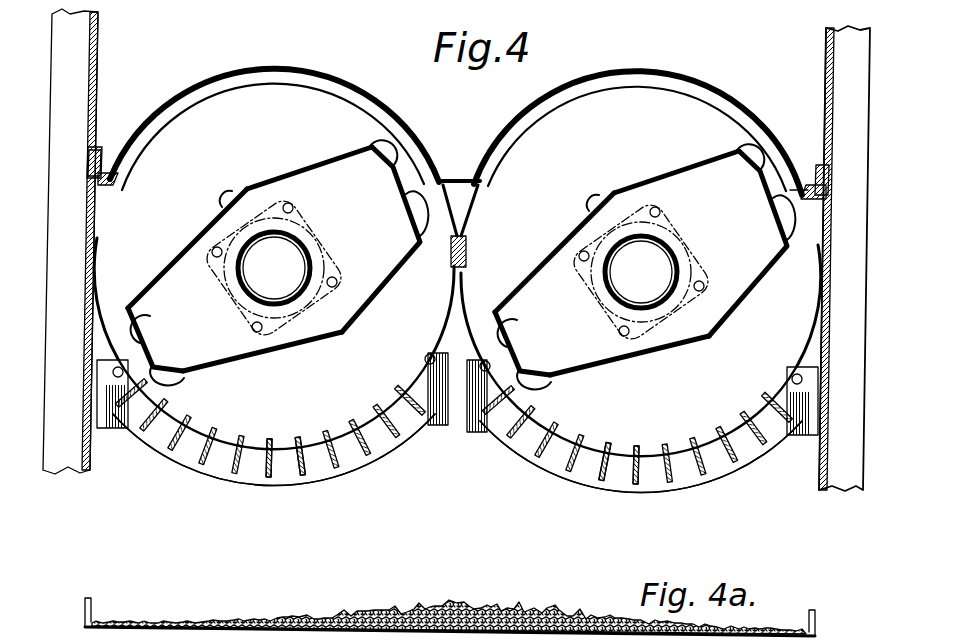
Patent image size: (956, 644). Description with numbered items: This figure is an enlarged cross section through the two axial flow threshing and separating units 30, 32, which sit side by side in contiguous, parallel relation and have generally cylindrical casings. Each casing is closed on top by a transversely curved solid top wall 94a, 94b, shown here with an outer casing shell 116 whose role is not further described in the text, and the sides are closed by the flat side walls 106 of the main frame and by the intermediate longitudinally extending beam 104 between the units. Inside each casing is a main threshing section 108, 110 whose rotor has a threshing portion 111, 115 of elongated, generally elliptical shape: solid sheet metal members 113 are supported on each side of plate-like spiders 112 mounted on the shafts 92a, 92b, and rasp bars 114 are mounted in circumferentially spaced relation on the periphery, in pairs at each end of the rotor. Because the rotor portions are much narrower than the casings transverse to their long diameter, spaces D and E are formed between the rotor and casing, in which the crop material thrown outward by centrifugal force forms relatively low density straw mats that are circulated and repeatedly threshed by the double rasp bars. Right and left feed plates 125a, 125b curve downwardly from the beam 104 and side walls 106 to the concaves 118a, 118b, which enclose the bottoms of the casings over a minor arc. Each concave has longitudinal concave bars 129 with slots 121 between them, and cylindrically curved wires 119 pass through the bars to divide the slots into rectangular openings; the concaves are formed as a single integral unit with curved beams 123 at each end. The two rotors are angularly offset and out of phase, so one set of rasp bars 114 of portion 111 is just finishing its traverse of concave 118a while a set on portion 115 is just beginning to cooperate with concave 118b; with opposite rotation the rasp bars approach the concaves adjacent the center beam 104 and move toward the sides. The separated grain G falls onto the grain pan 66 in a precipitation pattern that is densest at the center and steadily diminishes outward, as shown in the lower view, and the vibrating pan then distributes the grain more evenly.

In FIG. 4, the threshing and separating unit 30 is at (342, 481).
In FIG. 4, the threshing and separating unit 32 is at (553, 483).
In FIG. 4A, the grain pan 66 is at (94, 608).
In FIG. 4, the shaft 92a is at (276, 246).
In FIG. 4, the shaft 92b is at (644, 250).
In FIG. 4, the top wall 94a is at (373, 93).
In FIG. 4, the top wall 94b is at (556, 95).
In FIG. 4, the intermediate beam 104 is at (468, 200).
In FIG. 4, the side wall 106 is at (90, 210).
In FIG. 4, the main threshing section 108 is at (140, 230).
In FIG. 4, the main threshing section 110 is at (783, 263).
In FIG. 4, the threshing portion 111 is at (265, 353).
In FIG. 4, the spider 112 is at (183, 285).
In FIG. 4, the sheet metal member 113 is at (270, 182).
In FIG. 4, the rasp bar 114 is at (390, 163).
In FIG. 4, the threshing portion 115 is at (655, 357).
In FIG. 4, the housing hood 116 is at (235, 78).
In FIG. 4, the concave 118a is at (366, 420).
In FIG. 4, the concave 118b is at (673, 442).
In FIG. 4, the wire 119 is at (177, 428).
In FIG. 4, the slot 121 is at (310, 434).
In FIG. 4, the curved beam 123 is at (191, 468).
In FIG. 4, the feed plate 125a is at (110, 300).
In FIG. 4, the feed plate 125b is at (546, 334).
In FIG. 4, the concave bar 129 is at (300, 470).
In FIG. 4, the space D is at (292, 119).
In FIG. 4, the space E is at (275, 420).
In FIG. 4A, the grain G is at (286, 614).